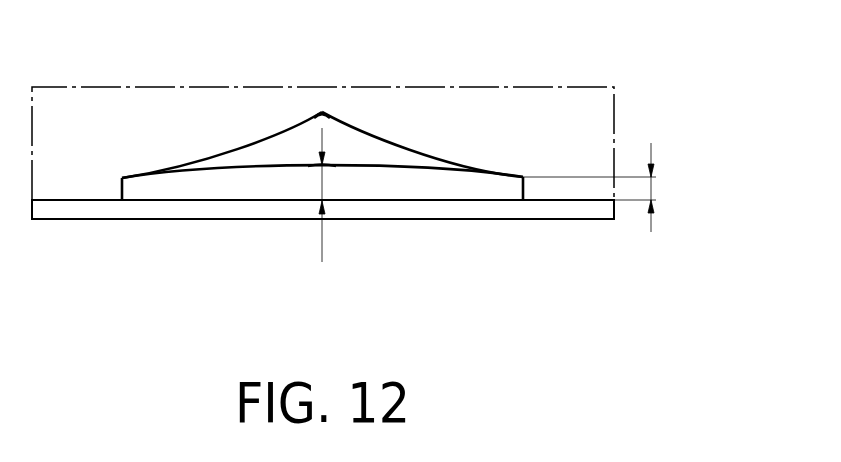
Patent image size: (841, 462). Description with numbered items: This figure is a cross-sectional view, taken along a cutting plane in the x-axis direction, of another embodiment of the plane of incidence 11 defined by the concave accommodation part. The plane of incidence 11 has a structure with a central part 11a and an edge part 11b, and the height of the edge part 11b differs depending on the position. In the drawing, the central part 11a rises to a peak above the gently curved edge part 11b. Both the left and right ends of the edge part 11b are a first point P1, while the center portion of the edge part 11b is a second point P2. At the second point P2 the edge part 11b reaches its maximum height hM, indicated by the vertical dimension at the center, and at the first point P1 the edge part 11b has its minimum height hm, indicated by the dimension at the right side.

The plane of incidence 11 is at (322, 103).
The central part 11a is at (322, 110).
The edge part 11b is at (408, 167).
The first point P1 is at (122, 177).
The second point P2 is at (318, 164).
The minimum height hm is at (609, 187).
The maximum height hM is at (343, 195).